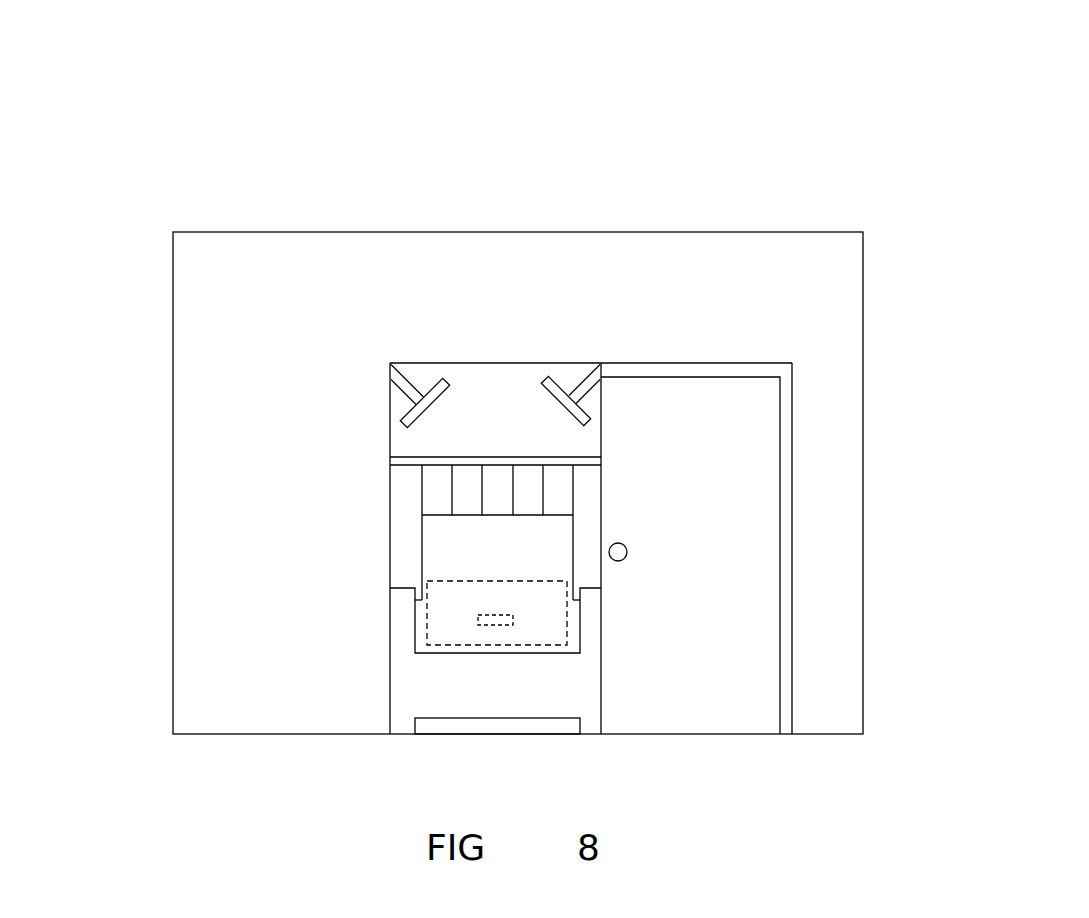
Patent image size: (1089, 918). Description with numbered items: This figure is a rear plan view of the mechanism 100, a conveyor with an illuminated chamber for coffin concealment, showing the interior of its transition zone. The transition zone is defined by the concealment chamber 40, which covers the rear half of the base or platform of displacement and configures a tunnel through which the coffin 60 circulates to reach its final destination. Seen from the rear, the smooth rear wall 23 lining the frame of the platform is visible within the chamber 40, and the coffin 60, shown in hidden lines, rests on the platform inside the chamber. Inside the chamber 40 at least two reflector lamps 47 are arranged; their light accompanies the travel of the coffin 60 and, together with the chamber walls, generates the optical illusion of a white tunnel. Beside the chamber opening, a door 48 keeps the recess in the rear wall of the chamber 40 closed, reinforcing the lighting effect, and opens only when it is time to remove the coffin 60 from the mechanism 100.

The conveyor mechanism with illuminated chamber for coffin concealment 100 is at (948, 92).
The concealment chamber 40 is at (628, 483).
The rear wall 23 is at (493, 687).
The reflector lamps 47 is at (428, 395).
The door 48 is at (692, 695).
The coffin 60 is at (450, 613).